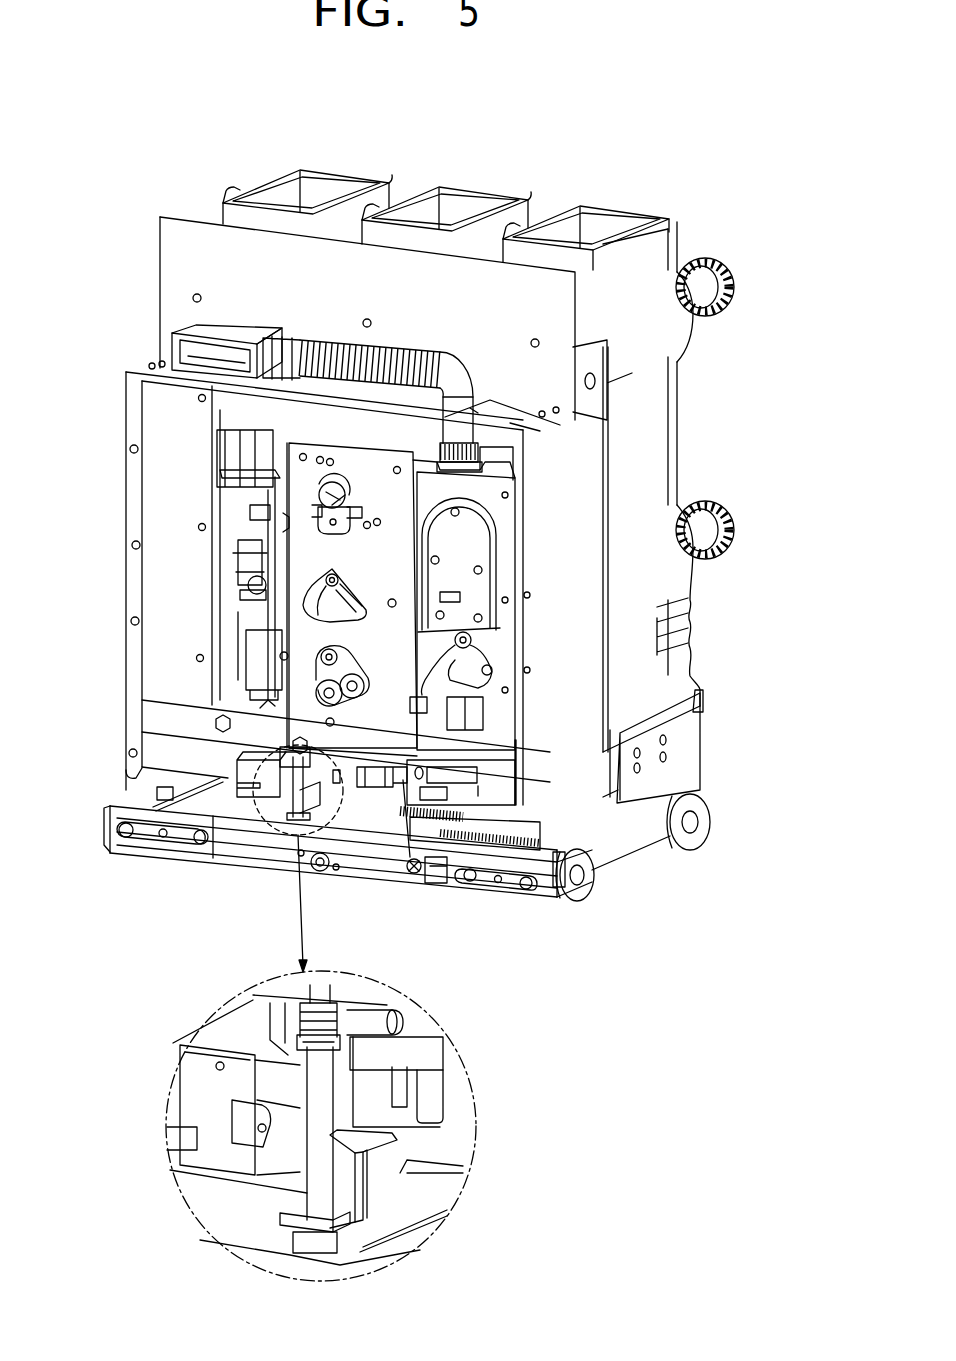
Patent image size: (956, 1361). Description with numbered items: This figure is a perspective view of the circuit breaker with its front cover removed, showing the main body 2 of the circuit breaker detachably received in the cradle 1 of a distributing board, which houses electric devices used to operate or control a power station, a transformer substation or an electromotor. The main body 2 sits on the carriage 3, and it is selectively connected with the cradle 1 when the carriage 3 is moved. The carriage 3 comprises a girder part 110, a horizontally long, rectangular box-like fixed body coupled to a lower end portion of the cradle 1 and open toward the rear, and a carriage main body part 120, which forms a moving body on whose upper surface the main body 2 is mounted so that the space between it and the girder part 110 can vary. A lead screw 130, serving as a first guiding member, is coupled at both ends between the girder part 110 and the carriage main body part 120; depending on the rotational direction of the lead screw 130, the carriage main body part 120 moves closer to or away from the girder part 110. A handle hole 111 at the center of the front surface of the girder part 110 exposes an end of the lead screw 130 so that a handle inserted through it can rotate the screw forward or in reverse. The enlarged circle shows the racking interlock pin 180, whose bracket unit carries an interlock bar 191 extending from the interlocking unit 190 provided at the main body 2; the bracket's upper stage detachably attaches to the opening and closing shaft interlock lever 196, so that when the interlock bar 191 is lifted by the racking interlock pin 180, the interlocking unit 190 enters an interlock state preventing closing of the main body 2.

The cradle 1 is at (655, 448).
The main body 2 is at (153, 583).
The carriage 3 is at (617, 853).
The girder part 110 is at (152, 857).
The handle hole 111 is at (326, 878).
The carriage main body part 120 is at (213, 792).
The lead screw 130 is at (318, 872).
The racking interlock pin 180 is at (300, 790).
The interlocking unit 190 is at (415, 876).
The interlock bar 191 is at (290, 805).
The opening and closing shaft interlock lever 196 is at (435, 1057).